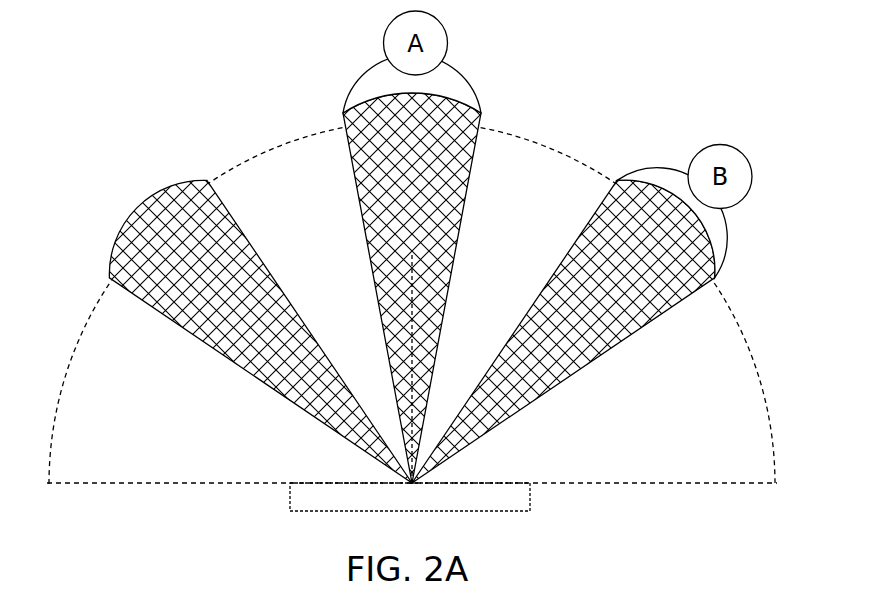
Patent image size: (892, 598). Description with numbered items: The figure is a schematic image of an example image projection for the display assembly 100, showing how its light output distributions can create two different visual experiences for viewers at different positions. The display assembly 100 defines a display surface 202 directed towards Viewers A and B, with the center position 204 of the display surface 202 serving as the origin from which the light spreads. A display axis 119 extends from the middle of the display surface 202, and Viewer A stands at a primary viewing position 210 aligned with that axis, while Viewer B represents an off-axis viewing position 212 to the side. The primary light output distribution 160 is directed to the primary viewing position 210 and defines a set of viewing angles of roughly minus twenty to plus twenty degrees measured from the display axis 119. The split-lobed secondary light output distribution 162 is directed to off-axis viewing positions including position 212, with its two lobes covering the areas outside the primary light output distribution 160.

The display assembly 100 is at (339, 488).
The display surface 202 is at (467, 482).
The position 204 is at (412, 485).
The primary light output distribution 160 is at (368, 178).
The split-lobed secondary light output distribution 162 is at (187, 303).
The primary viewing position 210 is at (411, 98).
The off-axis viewing position 212 is at (678, 210).
The display axis 119 is at (412, 318).